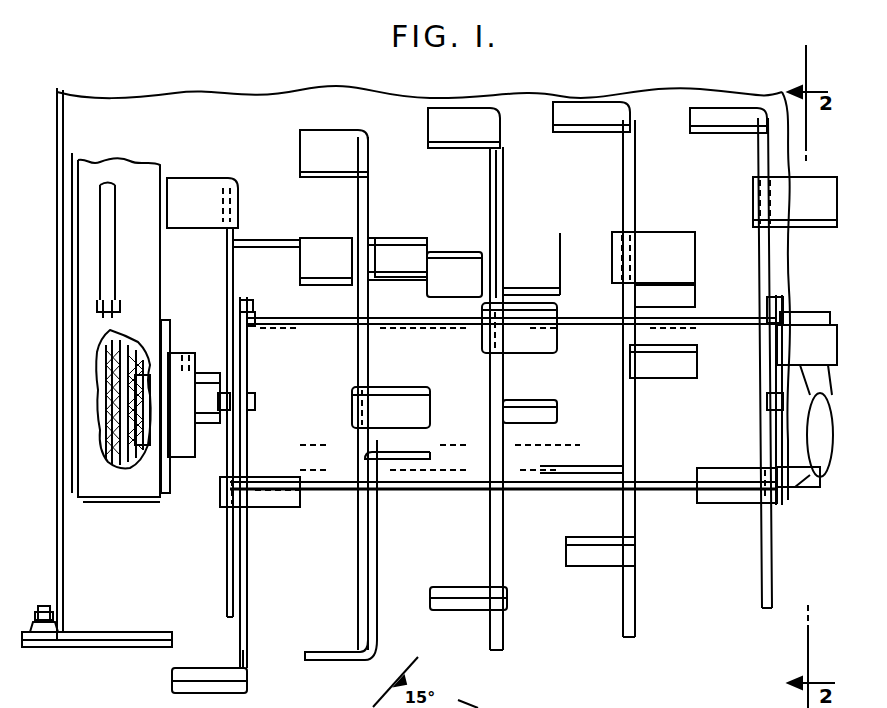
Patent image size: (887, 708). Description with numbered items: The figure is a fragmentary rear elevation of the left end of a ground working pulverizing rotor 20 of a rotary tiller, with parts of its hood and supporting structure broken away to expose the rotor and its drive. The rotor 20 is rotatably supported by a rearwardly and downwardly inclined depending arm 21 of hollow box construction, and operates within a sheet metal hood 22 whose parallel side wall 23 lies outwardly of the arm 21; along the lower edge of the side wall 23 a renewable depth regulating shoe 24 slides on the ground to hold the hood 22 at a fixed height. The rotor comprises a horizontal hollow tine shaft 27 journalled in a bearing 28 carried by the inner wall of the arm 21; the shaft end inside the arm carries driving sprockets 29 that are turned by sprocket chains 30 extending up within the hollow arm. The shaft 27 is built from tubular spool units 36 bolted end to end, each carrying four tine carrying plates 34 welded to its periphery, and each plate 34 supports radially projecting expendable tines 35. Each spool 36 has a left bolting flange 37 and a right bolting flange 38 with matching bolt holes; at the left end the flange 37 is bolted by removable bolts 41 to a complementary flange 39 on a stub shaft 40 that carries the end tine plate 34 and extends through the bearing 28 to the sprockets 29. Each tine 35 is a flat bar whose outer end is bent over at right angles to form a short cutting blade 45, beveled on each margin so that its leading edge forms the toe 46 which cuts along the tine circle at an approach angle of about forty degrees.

The pulverizing rotor 20 is at (546, 104).
The depending arm 21 is at (124, 175).
The hood 22 is at (192, 96).
The side wall 23 is at (62, 450).
The depth regulating shoe 24 is at (92, 648).
The tine shaft 27 is at (550, 496).
The bearing 28 is at (167, 372).
The driving sprocket 29 is at (138, 445).
The sprocket chain 30 is at (108, 338).
The tine carrying plate 34 is at (242, 246).
The tine 35 is at (240, 215).
The spool unit 36 is at (800, 303).
The left bolting flange 37 is at (250, 326).
The right bolting flange 38 is at (815, 395).
The stub shaft flange 39 is at (243, 303).
The stub shaft 40 is at (210, 423).
The removable bolt 41 is at (252, 395).
The cutting blade 45 is at (437, 124).
The toe 46 is at (223, 178).